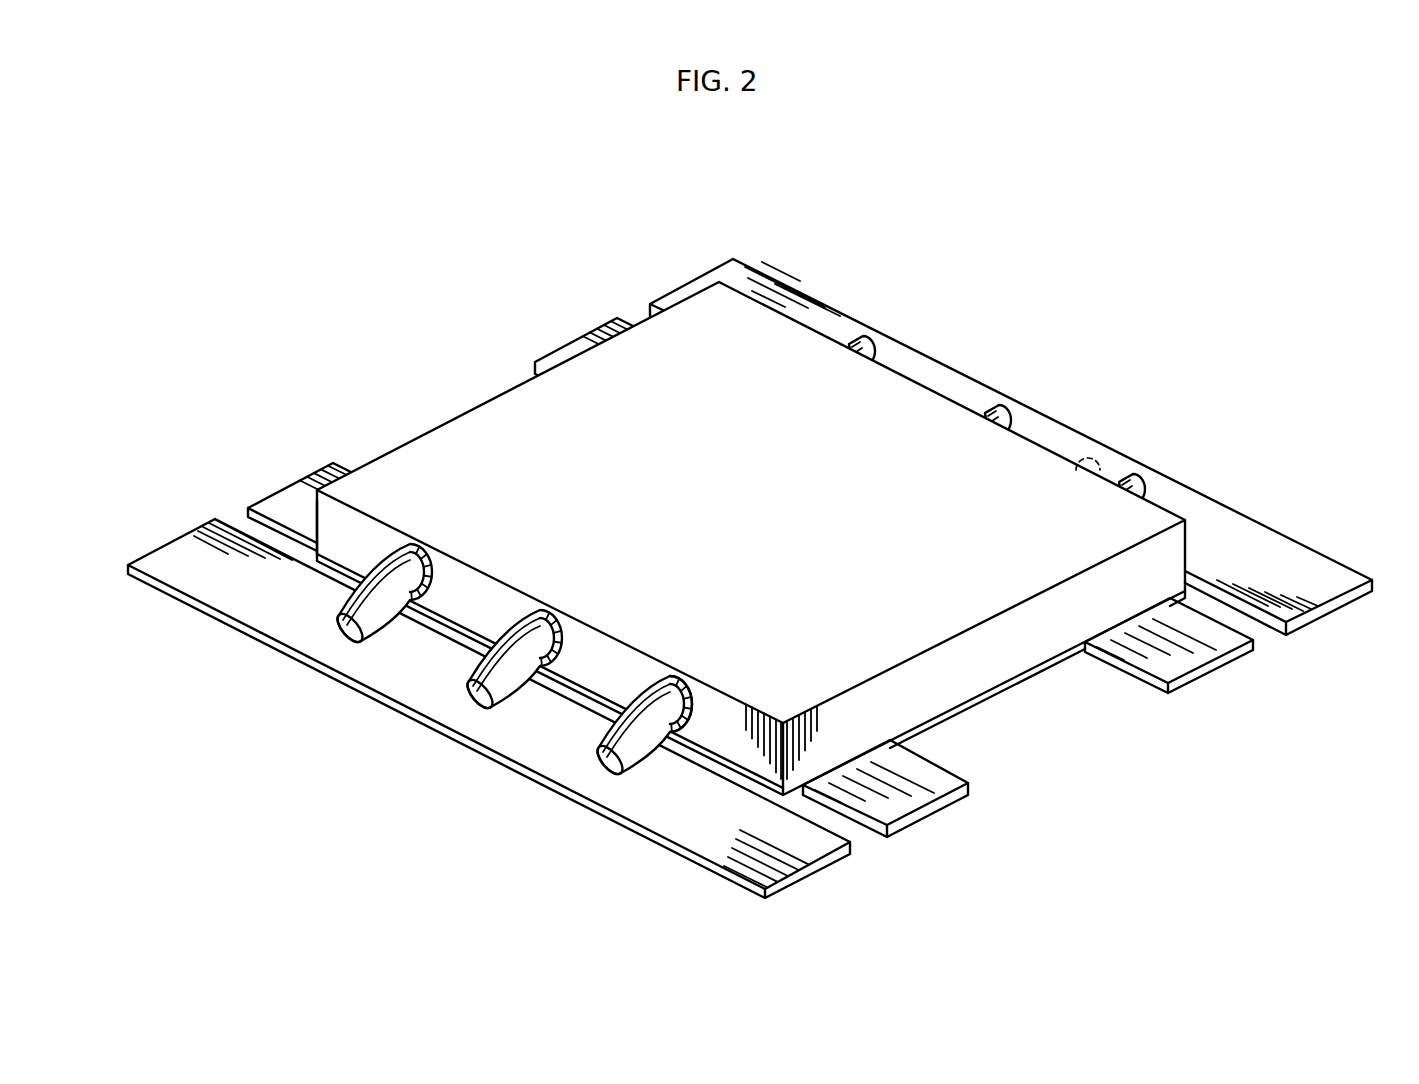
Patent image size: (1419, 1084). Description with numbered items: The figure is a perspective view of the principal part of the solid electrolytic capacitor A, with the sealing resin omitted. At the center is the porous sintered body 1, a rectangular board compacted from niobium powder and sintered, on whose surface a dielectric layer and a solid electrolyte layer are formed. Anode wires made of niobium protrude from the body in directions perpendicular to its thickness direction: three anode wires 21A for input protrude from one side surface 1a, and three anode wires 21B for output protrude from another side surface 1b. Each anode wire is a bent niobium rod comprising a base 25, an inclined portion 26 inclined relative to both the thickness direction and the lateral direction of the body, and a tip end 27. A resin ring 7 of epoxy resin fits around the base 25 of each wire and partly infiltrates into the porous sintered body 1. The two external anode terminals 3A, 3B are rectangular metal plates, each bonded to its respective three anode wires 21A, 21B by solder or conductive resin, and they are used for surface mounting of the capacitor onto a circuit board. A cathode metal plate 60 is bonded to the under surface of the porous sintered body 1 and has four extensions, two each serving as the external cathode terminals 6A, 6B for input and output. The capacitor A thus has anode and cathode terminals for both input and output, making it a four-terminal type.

The solid electrolytic capacitor A is at (336, 290).
The porous sintered body 1 is at (751, 456).
The side surface 1a is at (367, 553).
The side surface 1b is at (1078, 463).
The external anode terminal 3A is at (810, 848).
The external anode terminal 3B is at (1318, 582).
The external cathode terminal 6A is at (1203, 645).
The external cathode terminal 6B is at (568, 357).
The resin ring 7 is at (420, 540).
The anode wire 21A is at (350, 627).
The anode wire 21B is at (873, 337).
The base 25 is at (697, 722).
The inclined portion 26 is at (657, 745).
The tip end 27 is at (630, 768).
The cathode metal plate 60 is at (1003, 690).